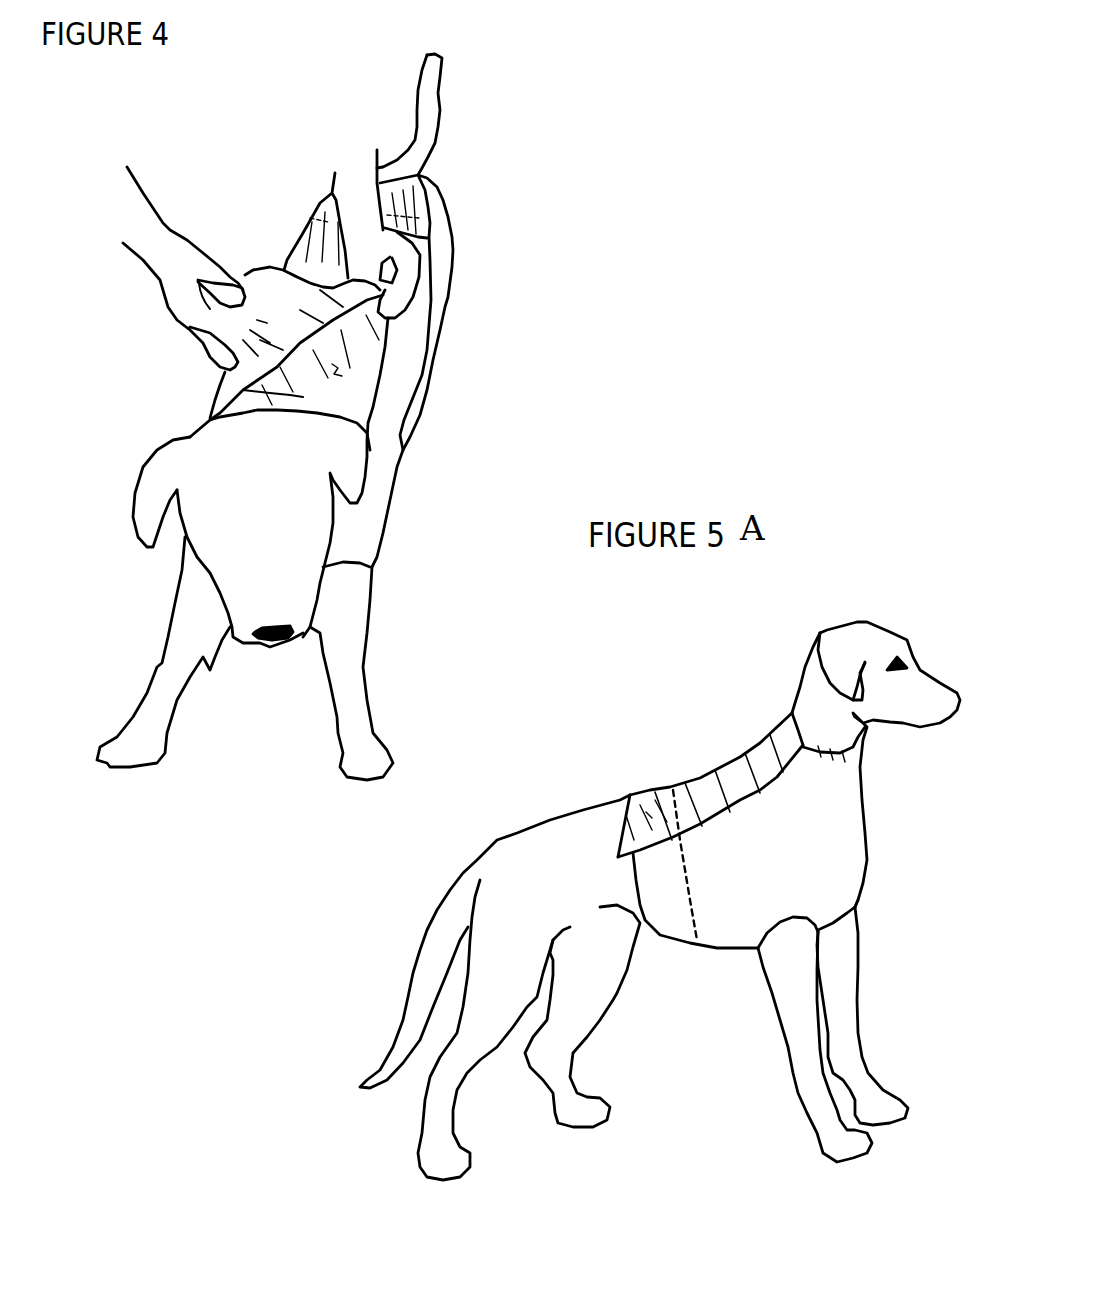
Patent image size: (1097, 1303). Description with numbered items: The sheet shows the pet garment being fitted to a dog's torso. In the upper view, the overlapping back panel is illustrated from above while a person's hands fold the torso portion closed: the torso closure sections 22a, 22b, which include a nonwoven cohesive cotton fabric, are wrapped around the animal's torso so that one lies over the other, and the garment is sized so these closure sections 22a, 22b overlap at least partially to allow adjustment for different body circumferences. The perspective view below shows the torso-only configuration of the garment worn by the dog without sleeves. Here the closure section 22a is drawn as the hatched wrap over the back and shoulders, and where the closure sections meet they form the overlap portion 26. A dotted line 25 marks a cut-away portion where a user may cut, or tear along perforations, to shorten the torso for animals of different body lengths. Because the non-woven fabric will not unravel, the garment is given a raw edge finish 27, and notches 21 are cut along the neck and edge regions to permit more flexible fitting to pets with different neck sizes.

In FIG. 5A, the notches 21 is at (817, 735).
In FIG. 4, the torso closure section 22a is at (260, 307).
In FIG. 5A, the torso closure section 22a is at (700, 778).
In FIG. 4, the torso closure section 22b is at (347, 357).
In FIG. 5A, the dotted line 25 is at (670, 787).
In FIG. 5A, the overlap portion 26 is at (630, 797).
In FIG. 5A, the raw edge finish 27 is at (618, 823).